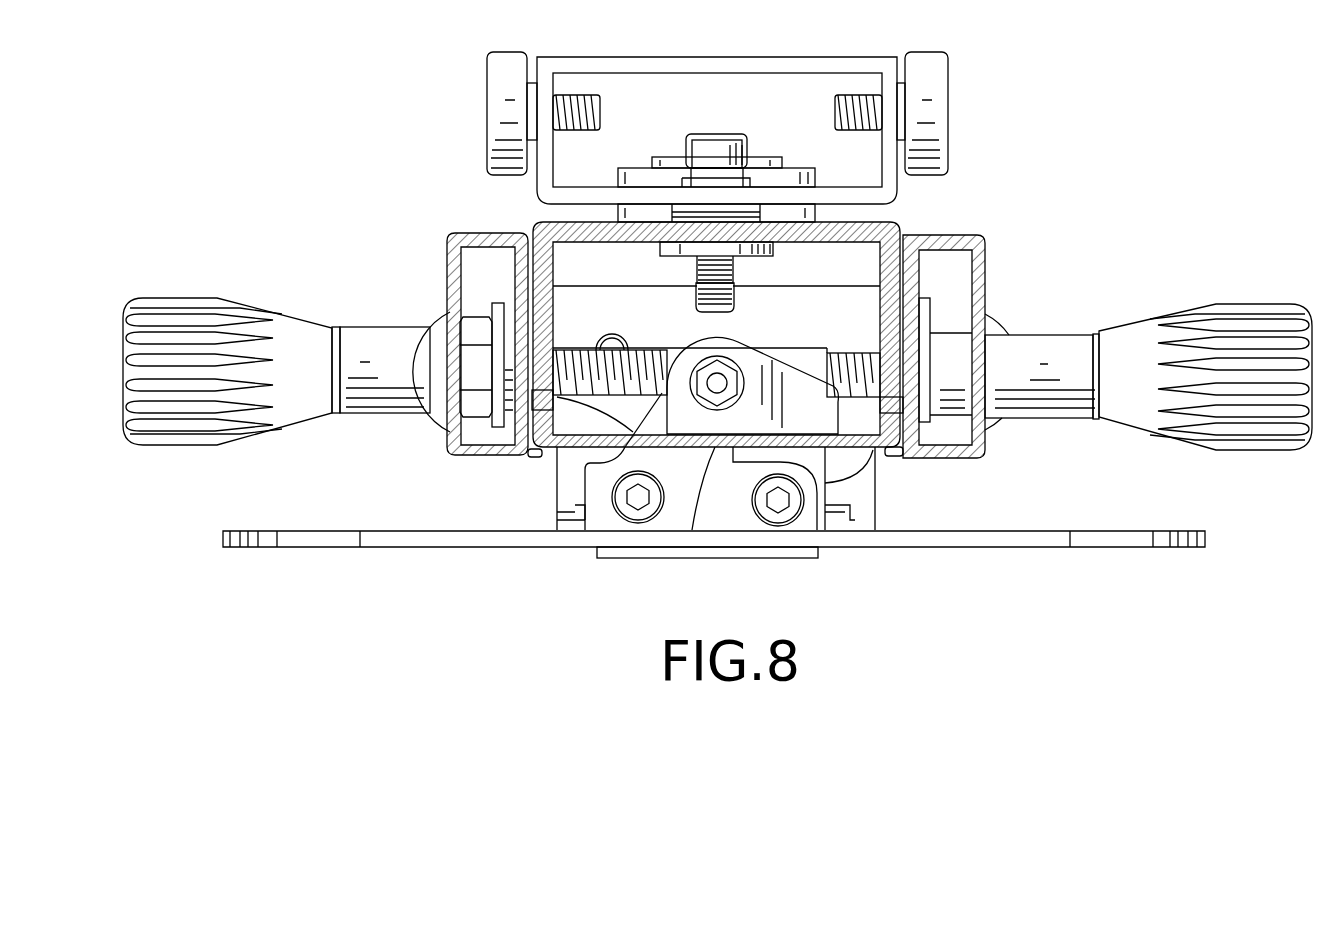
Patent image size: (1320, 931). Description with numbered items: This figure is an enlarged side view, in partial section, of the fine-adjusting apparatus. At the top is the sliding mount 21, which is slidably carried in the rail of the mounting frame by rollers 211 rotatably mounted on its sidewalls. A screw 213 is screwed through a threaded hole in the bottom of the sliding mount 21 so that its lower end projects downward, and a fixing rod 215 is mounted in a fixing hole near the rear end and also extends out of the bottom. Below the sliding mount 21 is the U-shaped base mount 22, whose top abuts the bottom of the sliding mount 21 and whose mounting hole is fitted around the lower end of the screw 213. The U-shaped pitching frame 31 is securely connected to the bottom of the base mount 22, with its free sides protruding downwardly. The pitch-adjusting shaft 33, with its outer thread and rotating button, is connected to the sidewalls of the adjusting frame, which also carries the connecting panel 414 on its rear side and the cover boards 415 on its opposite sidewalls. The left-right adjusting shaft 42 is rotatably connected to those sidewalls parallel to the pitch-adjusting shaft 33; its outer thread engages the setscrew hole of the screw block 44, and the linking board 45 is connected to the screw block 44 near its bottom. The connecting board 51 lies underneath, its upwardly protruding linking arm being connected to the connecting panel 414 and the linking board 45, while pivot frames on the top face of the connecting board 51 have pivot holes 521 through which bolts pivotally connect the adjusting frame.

The rollers 211 is at (948, 76).
The sliding mount 21 is at (890, 197).
The base mount 22 is at (540, 232).
The pitch-adjusting shaft 33 is at (366, 330).
The pitching frame 31 is at (852, 310).
The fixing rod 215 is at (700, 272).
The screw 213 is at (736, 306).
The connecting panel 414 is at (697, 352).
The cover boards 415 is at (985, 262).
The left-right adjusting shaft 42 is at (1189, 302).
The screw block 44 is at (813, 458).
The linking board 45 is at (735, 520).
The pivot hole 521 is at (600, 518).
The connecting board 51 is at (1178, 549).